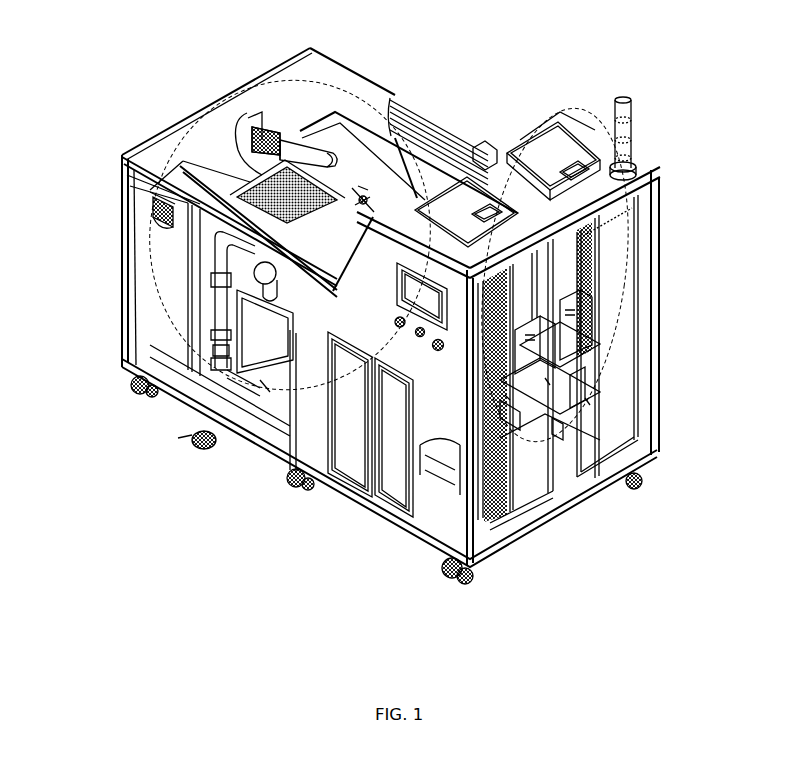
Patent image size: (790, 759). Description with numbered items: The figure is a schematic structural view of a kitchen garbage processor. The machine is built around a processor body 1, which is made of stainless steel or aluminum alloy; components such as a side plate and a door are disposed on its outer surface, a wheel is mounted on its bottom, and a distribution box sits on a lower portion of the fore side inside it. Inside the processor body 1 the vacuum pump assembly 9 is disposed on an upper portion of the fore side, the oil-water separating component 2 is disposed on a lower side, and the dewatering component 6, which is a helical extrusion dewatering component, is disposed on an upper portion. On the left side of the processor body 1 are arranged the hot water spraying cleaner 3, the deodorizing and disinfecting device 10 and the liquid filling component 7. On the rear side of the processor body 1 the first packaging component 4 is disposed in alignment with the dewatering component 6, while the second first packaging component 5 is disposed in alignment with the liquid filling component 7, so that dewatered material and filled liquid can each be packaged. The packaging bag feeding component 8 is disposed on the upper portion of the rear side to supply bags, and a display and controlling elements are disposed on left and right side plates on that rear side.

The processor body 1 is at (147, 228).
The oil-water separating component 2 is at (205, 320).
The hot water spraying cleaner 3 is at (510, 135).
The first packaging component 4 is at (563, 427).
The second first packaging component 5 is at (568, 327).
The dewatering component 6 is at (157, 200).
The liquid filling component 7 is at (417, 172).
The packaging bag feeding component 8 is at (598, 273).
The vacuum pump assembly 9 is at (270, 150).
The deodorizing and disinfecting device 10 is at (345, 130).